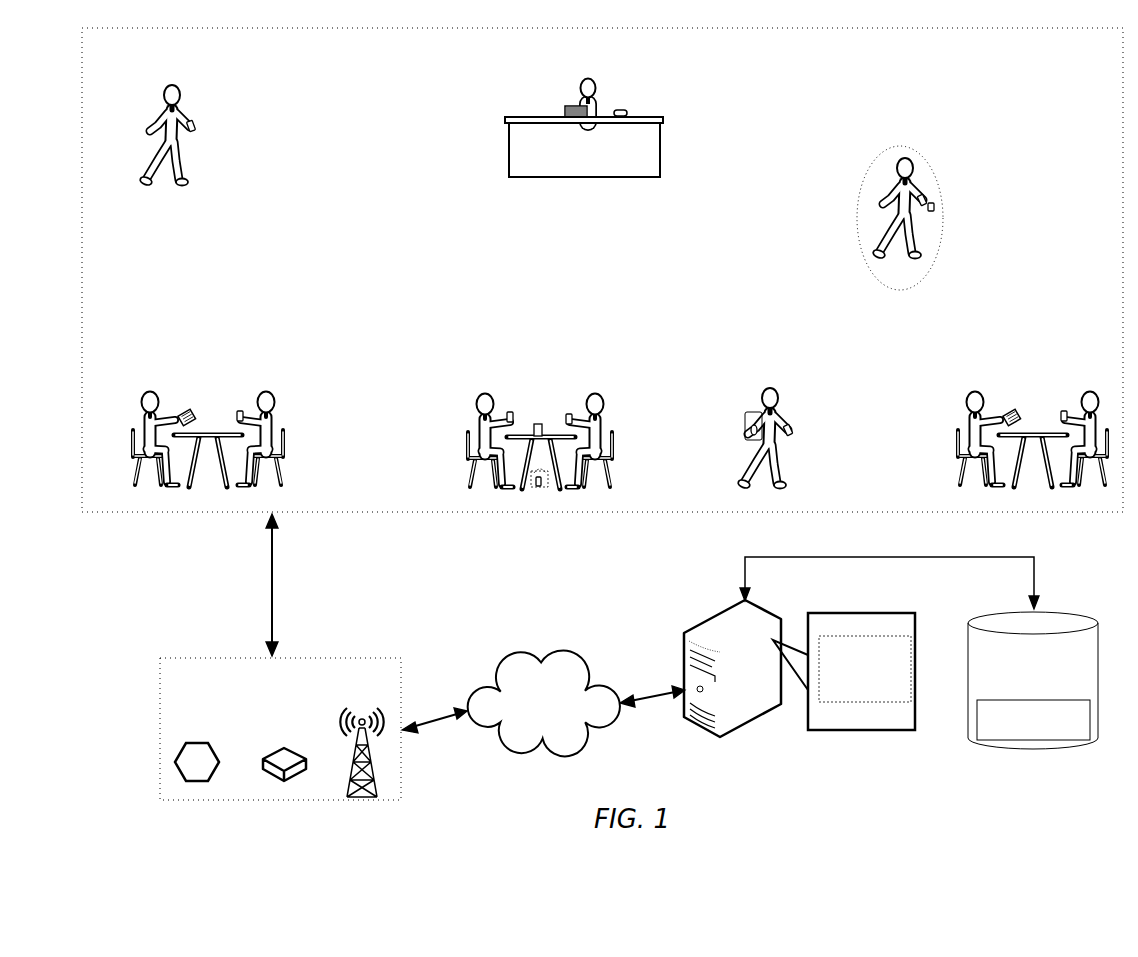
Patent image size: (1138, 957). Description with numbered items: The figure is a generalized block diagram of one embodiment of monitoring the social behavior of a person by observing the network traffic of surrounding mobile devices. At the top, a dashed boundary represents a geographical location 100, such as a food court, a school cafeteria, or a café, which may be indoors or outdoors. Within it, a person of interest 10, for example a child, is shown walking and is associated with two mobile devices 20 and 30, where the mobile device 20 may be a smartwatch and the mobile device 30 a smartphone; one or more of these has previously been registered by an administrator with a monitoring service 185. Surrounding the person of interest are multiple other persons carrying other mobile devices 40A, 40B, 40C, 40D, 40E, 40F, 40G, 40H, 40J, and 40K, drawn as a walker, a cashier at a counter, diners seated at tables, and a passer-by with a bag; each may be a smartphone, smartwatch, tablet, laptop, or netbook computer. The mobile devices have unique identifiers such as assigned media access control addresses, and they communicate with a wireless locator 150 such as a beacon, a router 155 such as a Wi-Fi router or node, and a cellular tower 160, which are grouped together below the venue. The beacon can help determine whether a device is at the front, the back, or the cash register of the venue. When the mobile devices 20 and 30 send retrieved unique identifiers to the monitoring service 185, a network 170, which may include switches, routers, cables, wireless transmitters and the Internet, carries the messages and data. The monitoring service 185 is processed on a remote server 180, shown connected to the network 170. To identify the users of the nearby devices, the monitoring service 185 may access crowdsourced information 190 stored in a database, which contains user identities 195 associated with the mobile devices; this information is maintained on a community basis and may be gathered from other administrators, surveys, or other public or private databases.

The geographical location 100 is at (1105, 55).
The person of interest 10 is at (940, 194).
The mobile device 20 is at (928, 200).
The mobile device 30 is at (1015, 208).
The mobile device 40A is at (237, 141).
The mobile device 40B is at (626, 109).
The mobile device 40C is at (197, 412).
The mobile device 40D is at (247, 410).
The mobile device 40E is at (532, 488).
The mobile device 40F is at (570, 412).
The mobile device 40G is at (751, 424).
The mobile device 40H is at (793, 430).
The mobile device 40J is at (1027, 412).
The mobile device 40K is at (1066, 410).
The wireless locator 150 is at (195, 733).
The router 155 is at (286, 743).
The cellular tower 160 is at (353, 731).
The network 170 is at (544, 703).
The remote server 180 is at (732, 668).
The monitoring service 185 is at (844, 671).
The crowdsourced information 190 is at (1033, 680).
The user identities 195 is at (1033, 720).